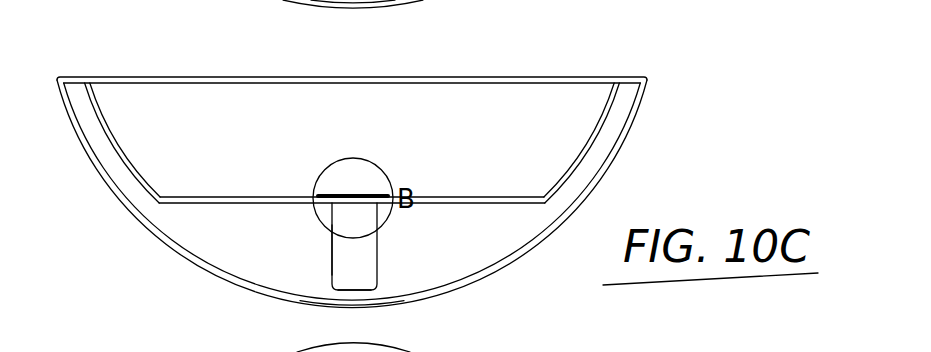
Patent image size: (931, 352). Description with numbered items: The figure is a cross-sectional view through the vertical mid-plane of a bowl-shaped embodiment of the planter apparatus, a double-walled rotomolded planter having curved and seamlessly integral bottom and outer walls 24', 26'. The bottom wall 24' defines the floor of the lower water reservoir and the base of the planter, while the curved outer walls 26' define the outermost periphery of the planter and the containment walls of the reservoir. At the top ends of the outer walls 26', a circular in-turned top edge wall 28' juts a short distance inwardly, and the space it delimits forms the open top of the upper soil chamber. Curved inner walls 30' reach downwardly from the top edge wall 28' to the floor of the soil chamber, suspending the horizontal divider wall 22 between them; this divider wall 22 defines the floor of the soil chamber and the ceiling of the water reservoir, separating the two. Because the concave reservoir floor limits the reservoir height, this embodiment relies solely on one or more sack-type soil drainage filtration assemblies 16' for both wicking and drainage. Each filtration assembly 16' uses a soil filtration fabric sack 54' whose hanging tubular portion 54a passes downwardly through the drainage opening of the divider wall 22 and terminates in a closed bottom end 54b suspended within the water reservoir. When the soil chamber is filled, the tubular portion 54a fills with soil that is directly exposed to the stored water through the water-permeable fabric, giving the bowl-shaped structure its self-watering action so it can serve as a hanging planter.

The filtration assembly 16' is at (373, 158).
The divider wall 22 is at (466, 200).
The bottom wall 24' is at (358, 323).
The outer walls 26' is at (365, 194).
The top edge wall 28' is at (375, 50).
The inner walls 30' is at (352, 119).
The soil filtration fabric sack 54' is at (381, 246).
The tubular portion 54a is at (342, 250).
The closed bottom end 54b is at (343, 292).